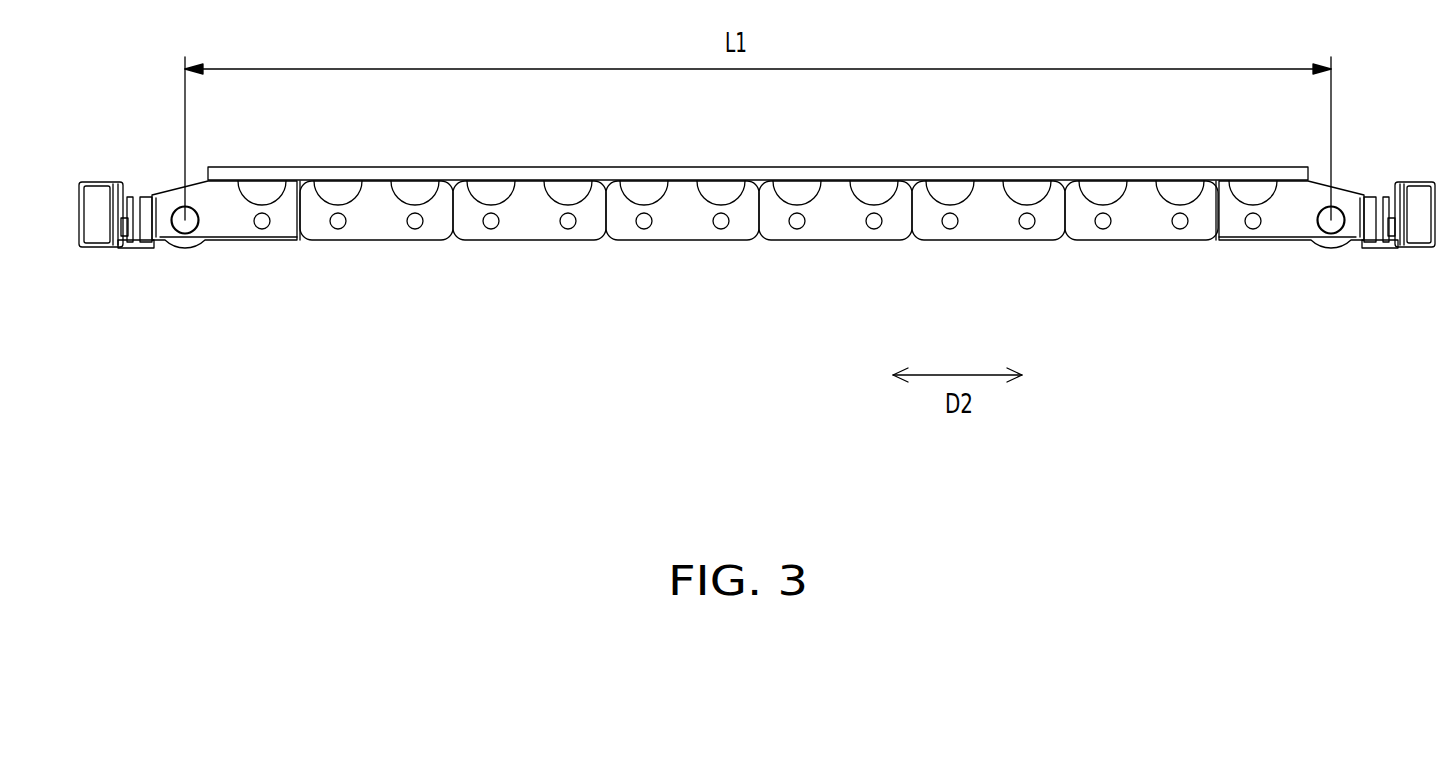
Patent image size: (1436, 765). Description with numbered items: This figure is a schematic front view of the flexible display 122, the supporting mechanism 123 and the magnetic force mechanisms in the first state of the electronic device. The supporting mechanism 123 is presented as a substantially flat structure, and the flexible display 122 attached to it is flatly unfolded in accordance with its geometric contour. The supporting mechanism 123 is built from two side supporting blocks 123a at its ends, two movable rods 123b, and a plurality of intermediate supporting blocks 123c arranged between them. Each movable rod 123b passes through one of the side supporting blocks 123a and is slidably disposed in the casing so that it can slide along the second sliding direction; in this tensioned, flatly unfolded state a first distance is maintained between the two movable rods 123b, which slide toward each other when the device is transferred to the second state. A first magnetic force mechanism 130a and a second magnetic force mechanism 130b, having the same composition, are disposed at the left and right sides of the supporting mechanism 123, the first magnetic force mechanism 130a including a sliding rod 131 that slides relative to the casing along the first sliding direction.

The flexible display 122 is at (548, 172).
The supporting mechanism 123 is at (757, 272).
The side supporting blocks 123a is at (233, 213).
The movable rods 123b is at (187, 248).
The intermediate supporting blocks 123c is at (377, 220).
The first magnetic force mechanism 130a is at (111, 207).
The second magnetic force mechanism 130b is at (1411, 160).
The sliding rod 131 is at (97, 242).